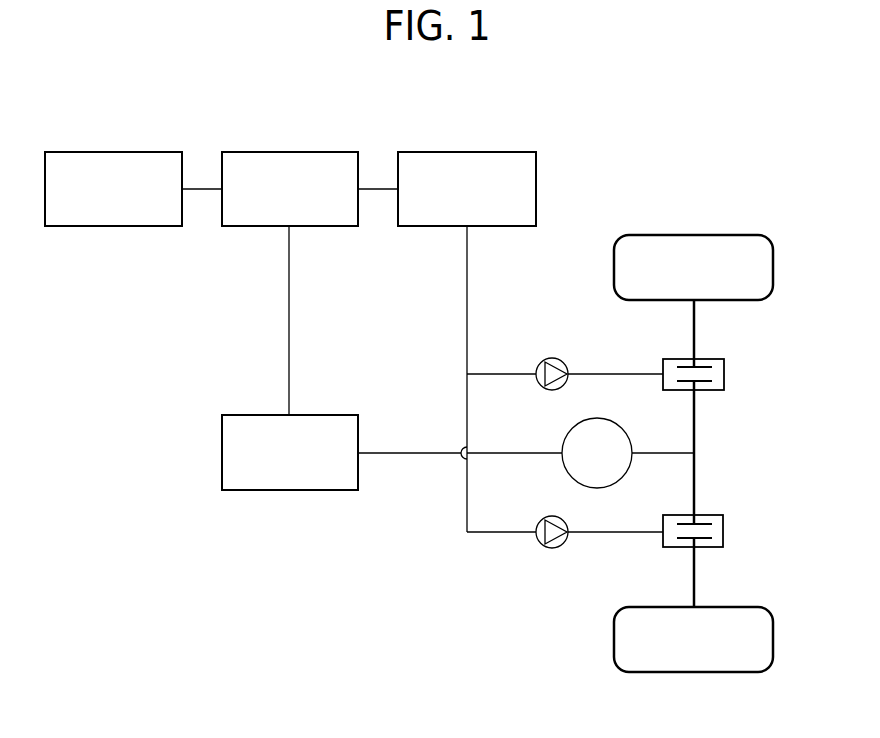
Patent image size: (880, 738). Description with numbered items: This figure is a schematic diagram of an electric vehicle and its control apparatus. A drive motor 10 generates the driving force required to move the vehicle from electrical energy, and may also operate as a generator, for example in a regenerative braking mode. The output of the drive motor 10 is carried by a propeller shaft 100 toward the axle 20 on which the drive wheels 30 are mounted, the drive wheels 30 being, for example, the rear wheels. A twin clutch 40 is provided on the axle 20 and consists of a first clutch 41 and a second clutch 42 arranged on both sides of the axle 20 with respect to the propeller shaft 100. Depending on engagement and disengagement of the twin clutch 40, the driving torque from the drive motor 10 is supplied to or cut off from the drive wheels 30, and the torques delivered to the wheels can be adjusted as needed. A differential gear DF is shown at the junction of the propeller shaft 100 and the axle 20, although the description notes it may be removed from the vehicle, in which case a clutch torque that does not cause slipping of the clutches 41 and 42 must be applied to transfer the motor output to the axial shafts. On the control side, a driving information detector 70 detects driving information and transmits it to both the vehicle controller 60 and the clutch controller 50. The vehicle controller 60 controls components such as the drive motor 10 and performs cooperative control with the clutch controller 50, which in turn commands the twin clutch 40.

The drive motor 10 is at (290, 490).
The axle 20 is at (694, 574).
The drive wheels 30 is at (773, 266).
The twin clutch 40 is at (742, 454).
The first clutch 41 is at (724, 374).
The second clutch 42 is at (720, 532).
The clutch controller 50 is at (467, 150).
The vehicle controller 60 is at (290, 150).
The driving information detector 70 is at (112, 150).
The propeller shaft 100 is at (512, 455).
The differential gear DF is at (622, 478).